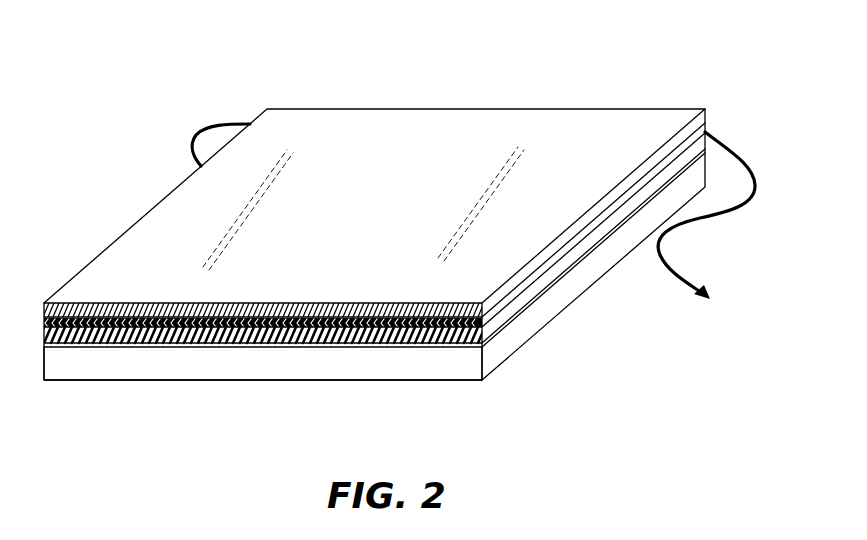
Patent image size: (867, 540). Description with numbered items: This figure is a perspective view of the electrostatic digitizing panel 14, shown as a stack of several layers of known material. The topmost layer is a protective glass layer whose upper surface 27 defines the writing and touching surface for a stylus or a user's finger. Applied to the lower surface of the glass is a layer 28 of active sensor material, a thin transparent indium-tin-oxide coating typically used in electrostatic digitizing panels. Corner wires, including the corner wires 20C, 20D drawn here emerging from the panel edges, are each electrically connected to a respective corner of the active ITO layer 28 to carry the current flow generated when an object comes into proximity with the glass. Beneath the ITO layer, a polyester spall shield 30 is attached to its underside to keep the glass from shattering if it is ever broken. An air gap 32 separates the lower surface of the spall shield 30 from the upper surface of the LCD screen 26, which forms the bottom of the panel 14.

The electrostatic digitizing panel 14 is at (96, 138).
The corner wire 20C is at (210, 124).
The corner wire 20D is at (682, 270).
The LCD screen 26 is at (433, 366).
The upper surface 27 is at (380, 130).
The active ITO layer 28 is at (107, 333).
The polyester spall shield 30 is at (293, 330).
The air gap 32 is at (198, 344).